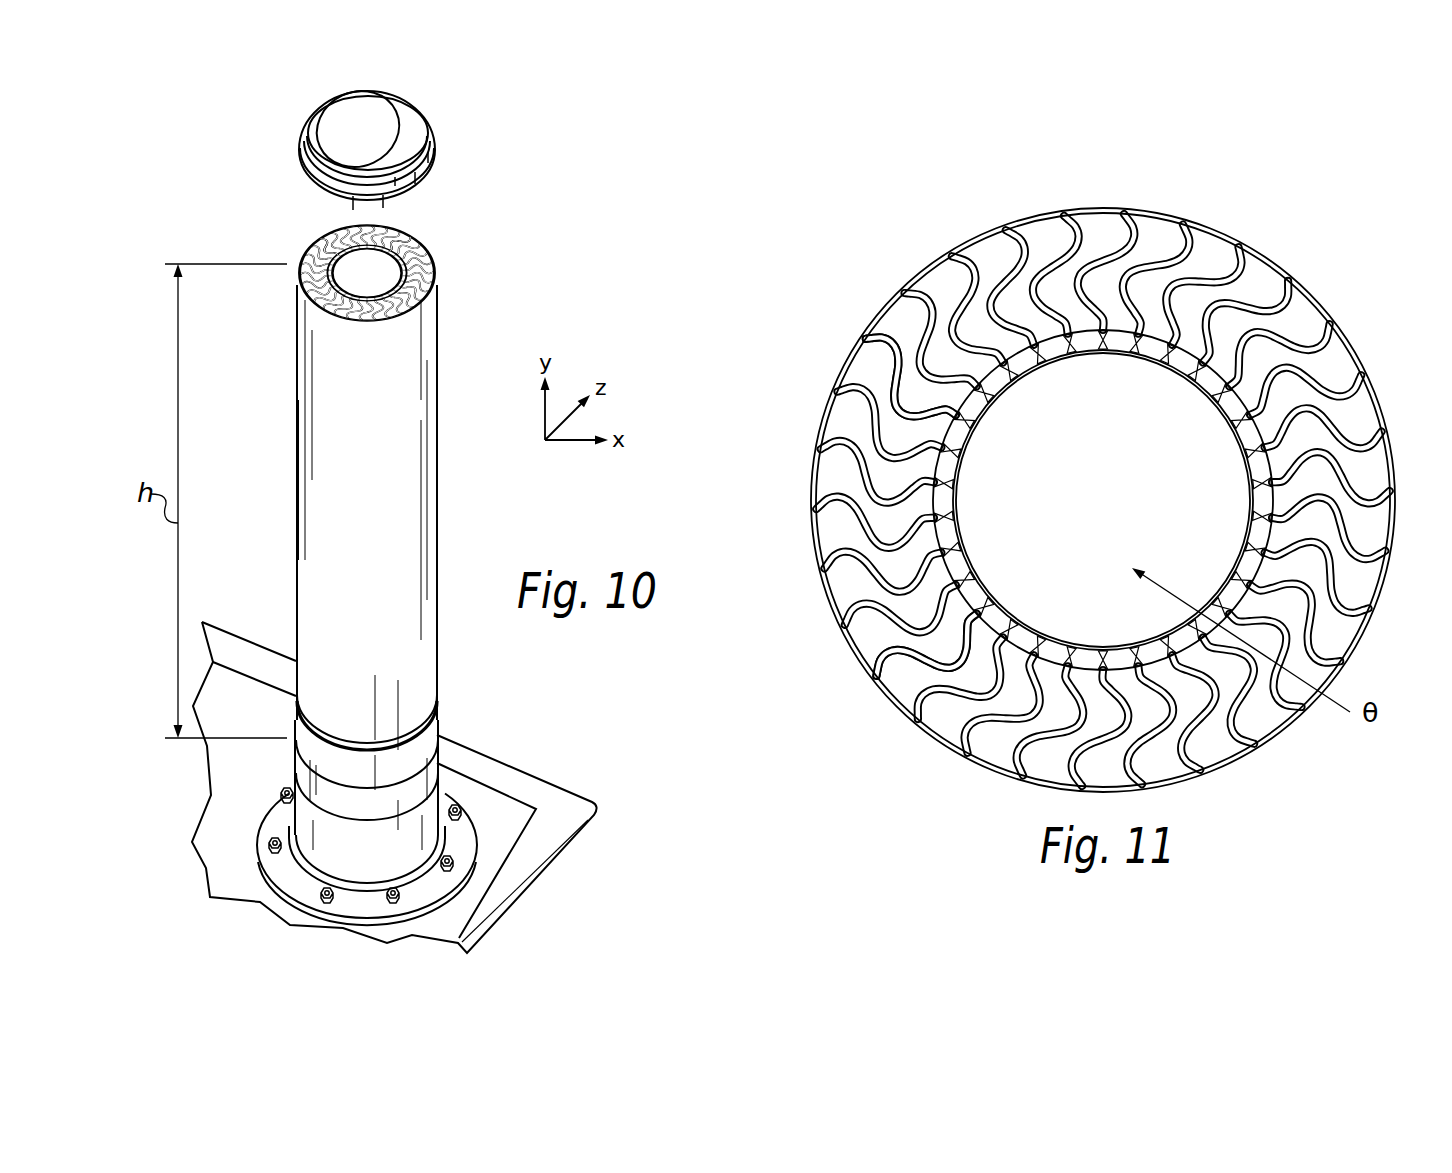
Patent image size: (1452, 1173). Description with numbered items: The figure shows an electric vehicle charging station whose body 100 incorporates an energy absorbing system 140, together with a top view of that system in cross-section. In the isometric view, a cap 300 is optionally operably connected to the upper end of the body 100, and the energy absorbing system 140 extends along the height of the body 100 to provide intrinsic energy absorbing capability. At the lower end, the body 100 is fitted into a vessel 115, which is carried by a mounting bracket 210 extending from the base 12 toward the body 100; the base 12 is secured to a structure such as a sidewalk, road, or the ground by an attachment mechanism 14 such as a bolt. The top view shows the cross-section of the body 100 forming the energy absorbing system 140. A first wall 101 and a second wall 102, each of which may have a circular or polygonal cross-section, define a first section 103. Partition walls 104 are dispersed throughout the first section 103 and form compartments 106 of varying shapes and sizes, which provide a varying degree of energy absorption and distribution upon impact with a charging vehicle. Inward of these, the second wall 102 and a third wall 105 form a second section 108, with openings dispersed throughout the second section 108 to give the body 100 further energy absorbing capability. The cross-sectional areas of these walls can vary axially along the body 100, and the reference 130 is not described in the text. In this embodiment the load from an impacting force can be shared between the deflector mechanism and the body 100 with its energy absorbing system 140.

In FIG. 10, the cap 300 is at (437, 147).
In FIG. 11, the partition walls 104 is at (858, 365).
In FIG. 10, the partition walls 104 is at (300, 247).
In FIG. 11, the first section 103 is at (940, 650).
In FIG. 10, the first section 103 is at (423, 242).
In FIG. 11, the energy absorbing system 140 is at (926, 258).
In FIG. 10, the energy absorbing system 140 is at (449, 268).
In FIG. 10, the body 100 is at (402, 366).
In FIG. 10, the pole body 130 is at (278, 491).
In FIG. 10, the vessel 115 is at (448, 722).
In FIG. 10, the mounting bracket 210 is at (455, 783).
In FIG. 10, the attachment mechanism 14 is at (245, 815).
In FIG. 10, the base 12 is at (457, 838).
In FIG. 11, the compartments 106 is at (1258, 277).
In FIG. 11, the first wall 101 is at (1357, 350).
In FIG. 11, the second wall 102 is at (1250, 424).
In FIG. 11, the third wall 105 is at (1238, 565).
In FIG. 11, the second section 108 is at (986, 550).